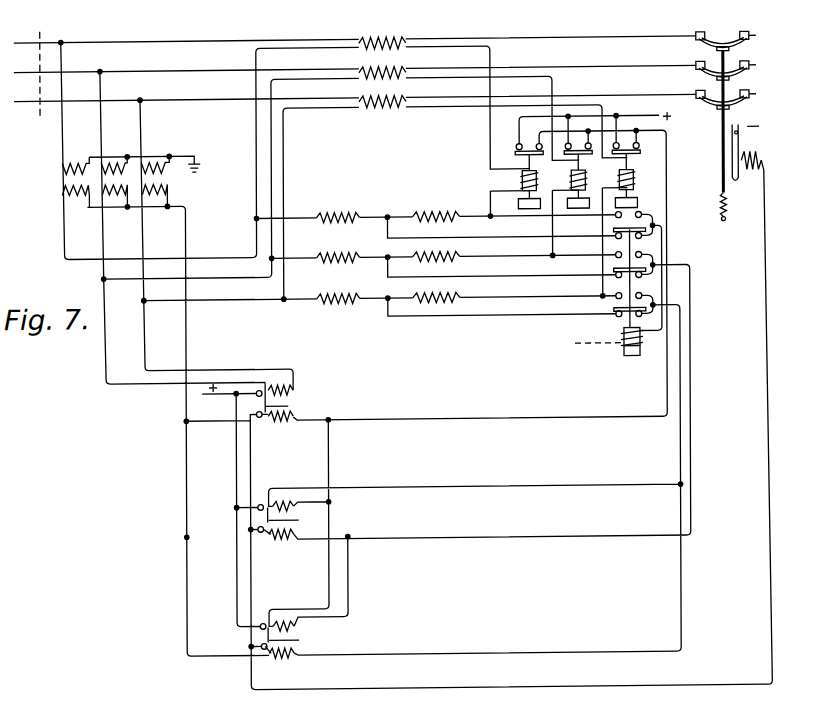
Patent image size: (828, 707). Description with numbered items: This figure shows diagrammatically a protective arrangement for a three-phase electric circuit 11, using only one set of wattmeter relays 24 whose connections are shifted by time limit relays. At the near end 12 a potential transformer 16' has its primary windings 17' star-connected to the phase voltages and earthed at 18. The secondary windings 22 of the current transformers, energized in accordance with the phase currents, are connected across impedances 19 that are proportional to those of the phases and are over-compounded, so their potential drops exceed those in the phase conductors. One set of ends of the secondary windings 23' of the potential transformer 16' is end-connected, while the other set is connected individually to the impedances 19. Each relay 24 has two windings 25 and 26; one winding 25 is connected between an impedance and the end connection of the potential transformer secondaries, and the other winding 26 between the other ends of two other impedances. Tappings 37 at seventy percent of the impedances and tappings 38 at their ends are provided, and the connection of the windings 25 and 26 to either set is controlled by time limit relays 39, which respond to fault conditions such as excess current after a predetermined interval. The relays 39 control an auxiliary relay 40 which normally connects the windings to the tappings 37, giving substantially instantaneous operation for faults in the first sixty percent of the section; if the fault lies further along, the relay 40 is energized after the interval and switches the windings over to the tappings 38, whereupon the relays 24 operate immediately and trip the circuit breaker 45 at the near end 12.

The three-phase electric circuit 11 is at (641, 43).
The near end 12 is at (42, 66).
The potential transformer 16' is at (118, 185).
The primary windings 17' is at (119, 156).
The earth connection 18 is at (204, 166).
The impedances 19 is at (414, 213).
The secondary windings of current transformers 22 is at (408, 41).
The secondary windings of potential transformer 23' is at (129, 205).
The wattmeter relays 24 is at (226, 418).
The relay winding 25 is at (295, 415).
The relay winding 26 is at (301, 572).
The tapping points 37 is at (508, 270).
The tapping points 38 is at (493, 219).
The time limit relays 39 is at (539, 184).
The auxiliary relay 40 is at (622, 343).
The circuit breaker 45 is at (721, 114).